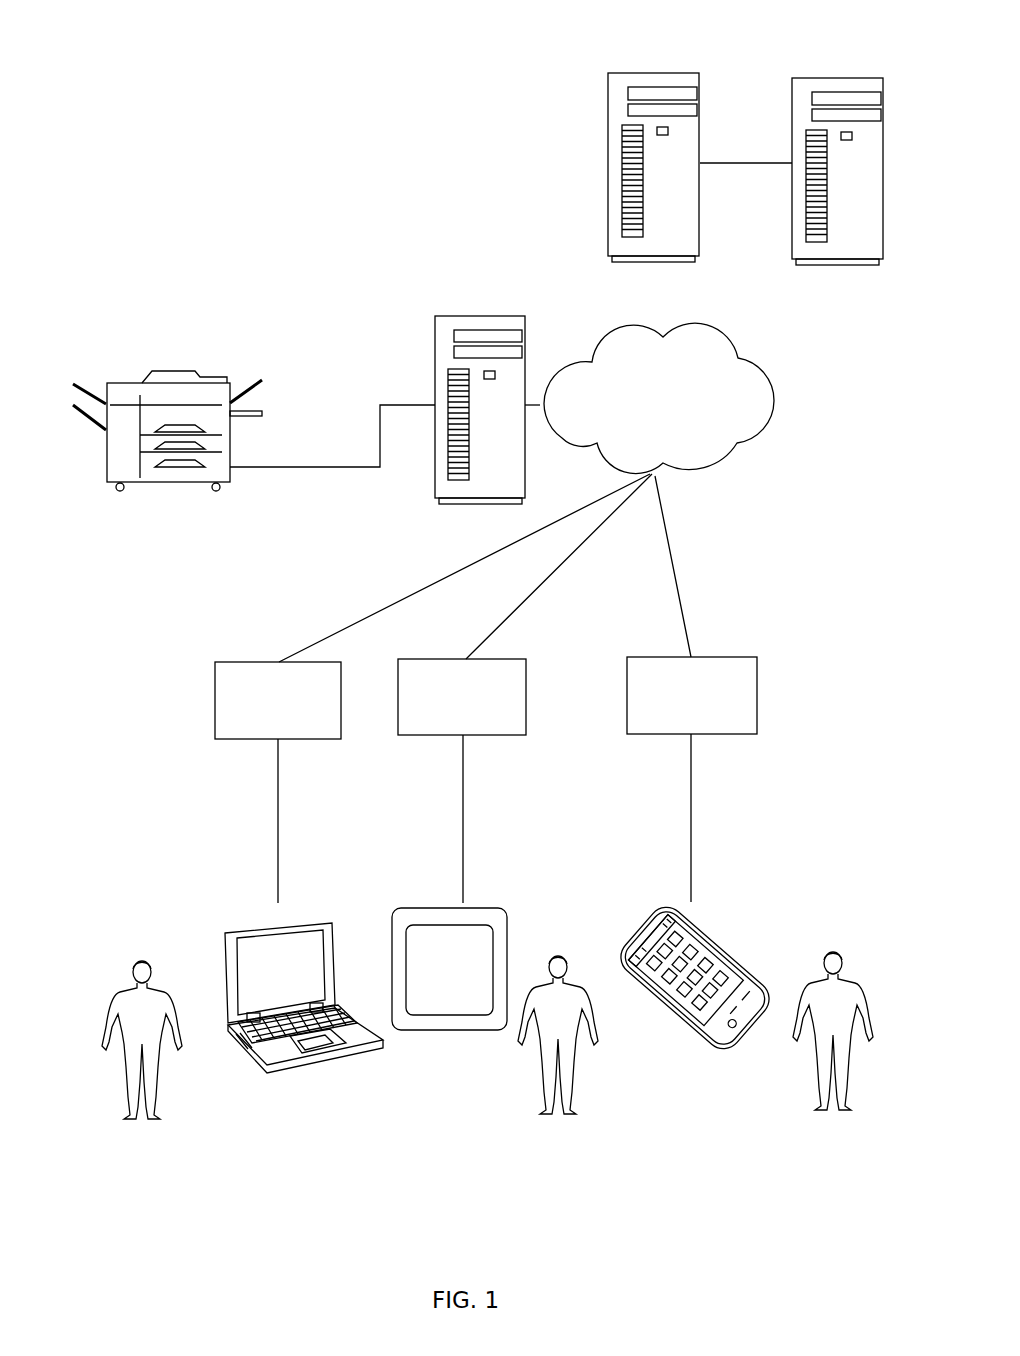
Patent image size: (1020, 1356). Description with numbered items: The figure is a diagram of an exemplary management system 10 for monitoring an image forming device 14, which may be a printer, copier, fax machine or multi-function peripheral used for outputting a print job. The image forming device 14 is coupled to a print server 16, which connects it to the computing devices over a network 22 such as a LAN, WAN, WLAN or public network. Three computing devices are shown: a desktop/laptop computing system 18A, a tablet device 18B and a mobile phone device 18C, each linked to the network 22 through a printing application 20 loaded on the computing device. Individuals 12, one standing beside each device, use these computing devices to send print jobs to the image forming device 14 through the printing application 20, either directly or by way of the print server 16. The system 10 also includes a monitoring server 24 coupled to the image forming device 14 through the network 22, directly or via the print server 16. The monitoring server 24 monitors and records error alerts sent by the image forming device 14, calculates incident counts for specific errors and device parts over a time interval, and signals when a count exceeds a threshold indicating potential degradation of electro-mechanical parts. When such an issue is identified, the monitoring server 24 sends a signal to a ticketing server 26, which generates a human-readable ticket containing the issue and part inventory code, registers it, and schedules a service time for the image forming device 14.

The management system 10 is at (231, 197).
The individuals 12 is at (150, 1118).
The image forming device 14 is at (128, 382).
The print server 16 is at (474, 316).
The desktop/laptop computing system 18A is at (295, 921).
The tablet device 18B is at (472, 908).
The mobile phone device 18C is at (720, 935).
The printing application 20 is at (215, 699).
The network 22 is at (745, 362).
The monitoring server 24 is at (642, 73).
The ticketing server 26 is at (846, 78).